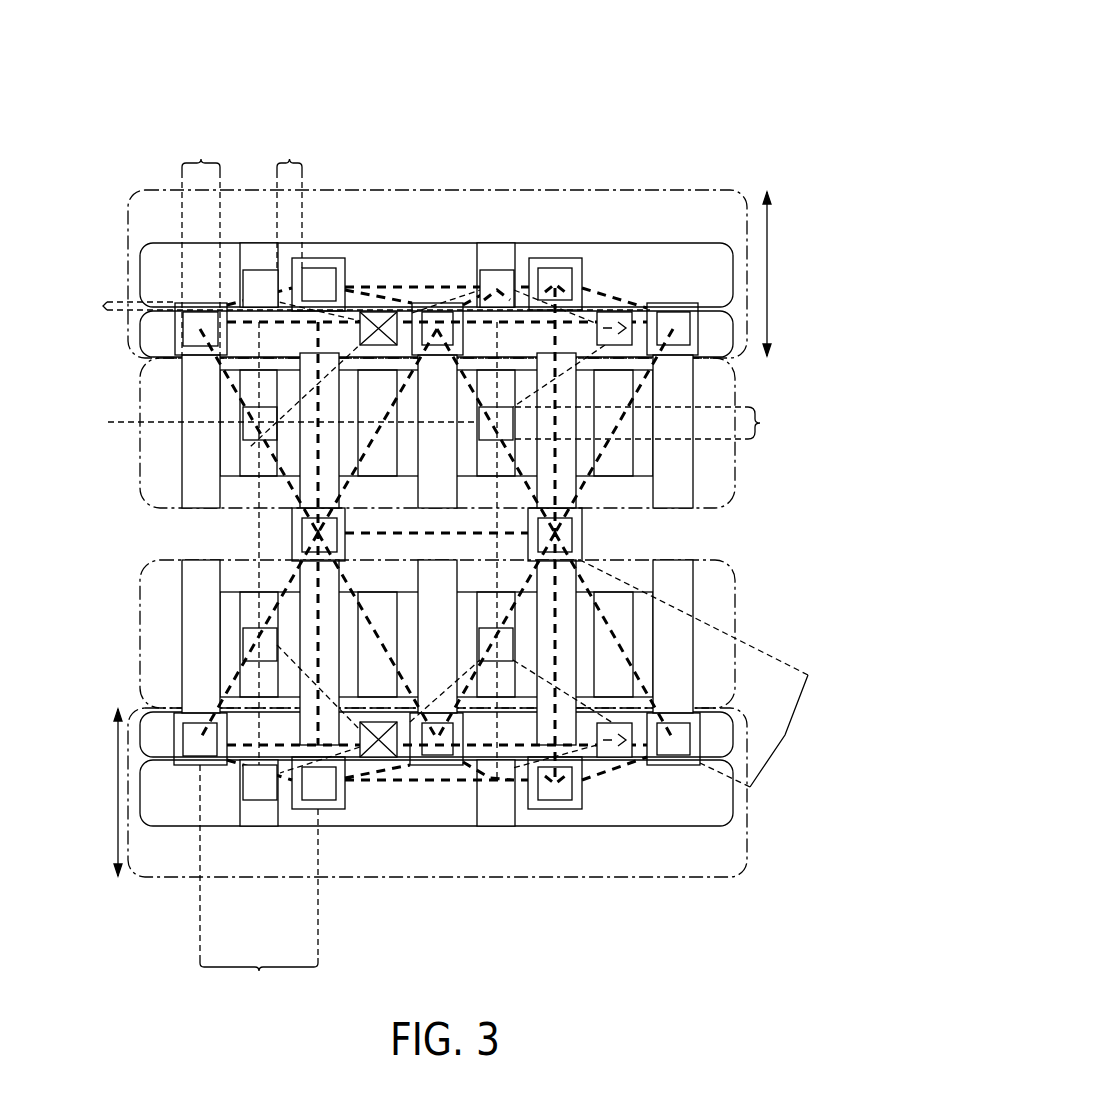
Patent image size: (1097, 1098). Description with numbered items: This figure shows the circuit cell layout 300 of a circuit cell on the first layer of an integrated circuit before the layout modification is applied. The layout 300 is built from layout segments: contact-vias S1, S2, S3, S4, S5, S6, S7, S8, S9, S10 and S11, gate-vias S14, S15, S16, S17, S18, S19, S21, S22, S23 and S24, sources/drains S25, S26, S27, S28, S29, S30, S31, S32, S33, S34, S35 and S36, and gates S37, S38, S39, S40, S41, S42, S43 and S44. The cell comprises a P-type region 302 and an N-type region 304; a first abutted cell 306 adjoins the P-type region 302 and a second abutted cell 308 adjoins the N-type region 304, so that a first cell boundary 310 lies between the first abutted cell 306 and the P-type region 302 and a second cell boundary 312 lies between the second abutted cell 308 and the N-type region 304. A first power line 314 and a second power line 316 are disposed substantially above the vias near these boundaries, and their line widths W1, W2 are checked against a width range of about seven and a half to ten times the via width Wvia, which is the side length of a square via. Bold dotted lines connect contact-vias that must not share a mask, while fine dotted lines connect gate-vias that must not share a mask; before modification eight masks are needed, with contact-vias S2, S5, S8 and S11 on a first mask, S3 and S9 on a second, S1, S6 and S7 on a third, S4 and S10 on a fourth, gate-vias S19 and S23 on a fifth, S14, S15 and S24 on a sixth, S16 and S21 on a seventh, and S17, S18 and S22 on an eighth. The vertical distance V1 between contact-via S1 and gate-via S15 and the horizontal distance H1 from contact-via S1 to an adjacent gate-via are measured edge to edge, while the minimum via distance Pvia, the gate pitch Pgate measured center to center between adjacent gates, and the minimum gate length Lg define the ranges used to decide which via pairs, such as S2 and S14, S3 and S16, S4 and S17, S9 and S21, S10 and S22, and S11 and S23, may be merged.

The circuit cell layout 300 is at (762, 72).
The P-type region 302 is at (735, 468).
The N-type region 304 is at (735, 597).
The first abutted cell 306 is at (665, 278).
The second abutted cell 308 is at (663, 804).
The first cell boundary 310 is at (733, 313).
The second cell boundary 312 is at (733, 758).
The first power line 314 is at (733, 190).
The second power line 316 is at (733, 877).
The contact-via S1 is at (268, 277).
The contact-via S2 is at (488, 277).
The contact-via S3 is at (378, 328).
The contact-via S4 is at (614, 328).
The contact-via S5 is at (250, 422).
The contact-via S6 is at (513, 440).
The contact-via S7 is at (250, 645).
The contact-via S8 is at (502, 630).
The contact-via S9 is at (383, 750).
The contact-via S10 is at (618, 760).
The contact-via S11 is at (252, 790).
The gate-via S14 is at (555, 284).
The gate-via S15 is at (190, 335).
The gate-via S16 is at (437, 328).
The gate-via S17 is at (673, 328).
The gate-via S18 is at (305, 538).
The gate-via S19 is at (570, 533).
The gate-via S21 is at (437, 750).
The gate-via S22 is at (675, 752).
The gate-via S23 is at (318, 282).
The gate-via S24 is at (190, 738).
The source/drain S25 is at (250, 250).
The source/drain S26 is at (507, 252).
The source/drain S27 is at (250, 465).
The source/drain S28 is at (395, 384).
The source/drain S29 is at (488, 465).
The source/drain S30 is at (630, 384).
The source/drain S31 is at (250, 600).
The source/drain S32 is at (395, 701).
The source/drain S33 is at (488, 600).
The source/drain S34 is at (630, 701).
The source/drain S35 is at (272, 815).
The source/drain S36 is at (510, 797).
The gate S37 is at (215, 464).
The gate S38 is at (333, 490).
The gate S39 is at (455, 464).
The gate S40 is at (568, 490).
The gate S41 is at (690, 464).
The gate S42 is at (215, 618).
The gate S43 is at (455, 618).
The gate S44 is at (690, 586).
The minimum gate length Lg is at (201, 243).
The horizontal distance H1 is at (288, 199).
The line width W1 is at (785, 274).
The line width W2 is at (102, 792).
The via width Wvia is at (663, 423).
The gate pitch Pgate is at (259, 880).
The minimum distance Pvia is at (785, 735).
The vertical distance V1 is at (366, 305).